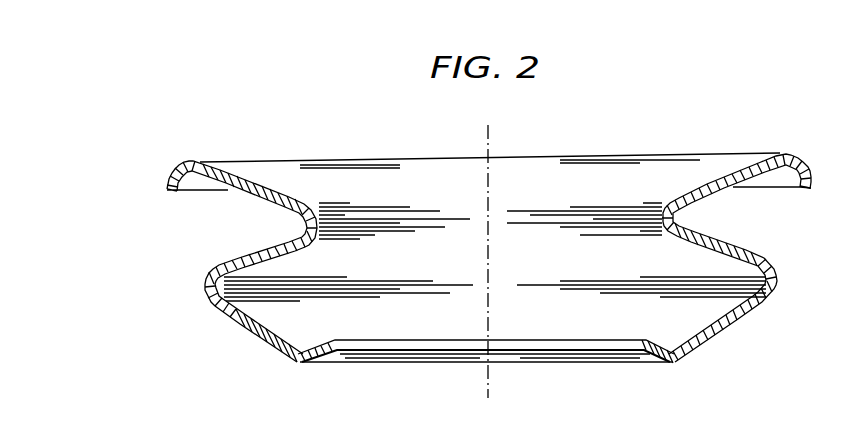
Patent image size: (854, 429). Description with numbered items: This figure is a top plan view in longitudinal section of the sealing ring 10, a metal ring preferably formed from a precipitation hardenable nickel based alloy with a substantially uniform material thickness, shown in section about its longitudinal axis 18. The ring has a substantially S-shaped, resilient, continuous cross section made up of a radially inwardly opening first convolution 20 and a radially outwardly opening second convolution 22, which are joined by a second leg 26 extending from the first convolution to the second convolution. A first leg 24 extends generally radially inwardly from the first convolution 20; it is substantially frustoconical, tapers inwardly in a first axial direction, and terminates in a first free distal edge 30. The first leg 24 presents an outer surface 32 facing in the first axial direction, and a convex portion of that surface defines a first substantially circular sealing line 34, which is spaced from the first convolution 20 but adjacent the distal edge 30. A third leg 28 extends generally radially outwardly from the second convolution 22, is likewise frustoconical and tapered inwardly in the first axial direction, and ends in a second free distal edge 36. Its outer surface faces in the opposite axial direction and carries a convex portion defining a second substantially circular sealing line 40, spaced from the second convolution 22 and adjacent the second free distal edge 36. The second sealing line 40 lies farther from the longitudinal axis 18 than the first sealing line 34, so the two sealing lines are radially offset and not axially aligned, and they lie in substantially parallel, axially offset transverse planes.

The sealing ring 10 is at (158, 127).
The longitudinal axis 18 is at (490, 147).
The first convolution 20 is at (198, 310).
The second convolution 22 is at (292, 227).
The first leg 24 is at (265, 358).
The second leg 26 is at (220, 254).
The third leg 28 is at (220, 201).
The first free distal edge 30 is at (355, 343).
The outer surface 32 is at (247, 328).
The first sealing line 34 is at (302, 378).
The second free distal edge 36 is at (167, 189).
The second sealing line 40 is at (200, 146).